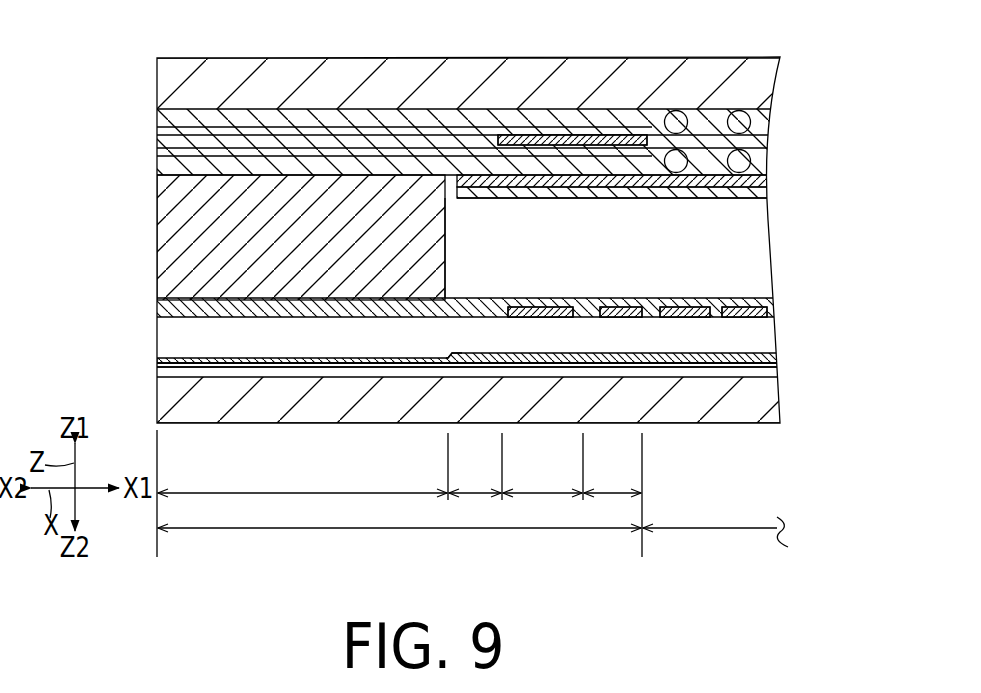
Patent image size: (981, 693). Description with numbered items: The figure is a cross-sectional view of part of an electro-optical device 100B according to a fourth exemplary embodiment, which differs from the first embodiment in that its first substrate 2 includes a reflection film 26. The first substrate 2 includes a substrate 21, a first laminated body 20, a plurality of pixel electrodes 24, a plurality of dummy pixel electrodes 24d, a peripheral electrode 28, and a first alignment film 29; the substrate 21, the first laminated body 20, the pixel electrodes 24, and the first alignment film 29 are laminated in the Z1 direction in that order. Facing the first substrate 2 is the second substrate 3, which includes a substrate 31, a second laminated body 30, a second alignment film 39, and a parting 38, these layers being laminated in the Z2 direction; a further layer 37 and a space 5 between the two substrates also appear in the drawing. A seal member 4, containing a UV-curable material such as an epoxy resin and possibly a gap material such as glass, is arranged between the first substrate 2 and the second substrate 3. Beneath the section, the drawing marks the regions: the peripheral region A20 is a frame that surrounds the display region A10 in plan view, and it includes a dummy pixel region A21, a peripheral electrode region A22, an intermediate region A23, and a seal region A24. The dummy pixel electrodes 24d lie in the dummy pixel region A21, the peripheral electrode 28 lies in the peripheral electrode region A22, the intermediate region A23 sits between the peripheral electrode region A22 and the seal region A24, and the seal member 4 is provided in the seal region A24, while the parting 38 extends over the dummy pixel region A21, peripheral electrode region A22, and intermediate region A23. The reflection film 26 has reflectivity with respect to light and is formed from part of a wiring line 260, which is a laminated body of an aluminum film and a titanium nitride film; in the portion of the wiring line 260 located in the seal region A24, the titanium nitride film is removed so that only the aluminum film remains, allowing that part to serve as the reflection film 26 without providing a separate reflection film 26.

The electro-optical device 100B is at (95, 115).
The second substrate 3 is at (783, 54).
The substrate 31 is at (760, 75).
The second laminated body 30 is at (775, 108).
The parting 38 is at (597, 135).
The adhesive layer 37 is at (768, 183).
The second alignment film 39 is at (770, 196).
The seal member 4 is at (185, 238).
The cavity 5 is at (745, 252).
The first substrate 2 is at (784, 416).
The first alignment film 29 is at (775, 308).
The peripheral electrode 28 is at (558, 317).
The dummy pixel electrode 24d is at (630, 317).
The pixel electrode 24 is at (745, 317).
The reflection film 26 is at (342, 360).
The wiring line 260 is at (458, 372).
The first laminated body 20 is at (757, 346).
The substrate 21 is at (755, 398).
The seal region A24 is at (302, 508).
The intermediate region A23 is at (475, 508).
The peripheral electrode region A22 is at (542, 508).
The dummy pixel region A21 is at (612, 508).
The peripheral region A20 is at (399, 545).
The display region A10 is at (715, 538).